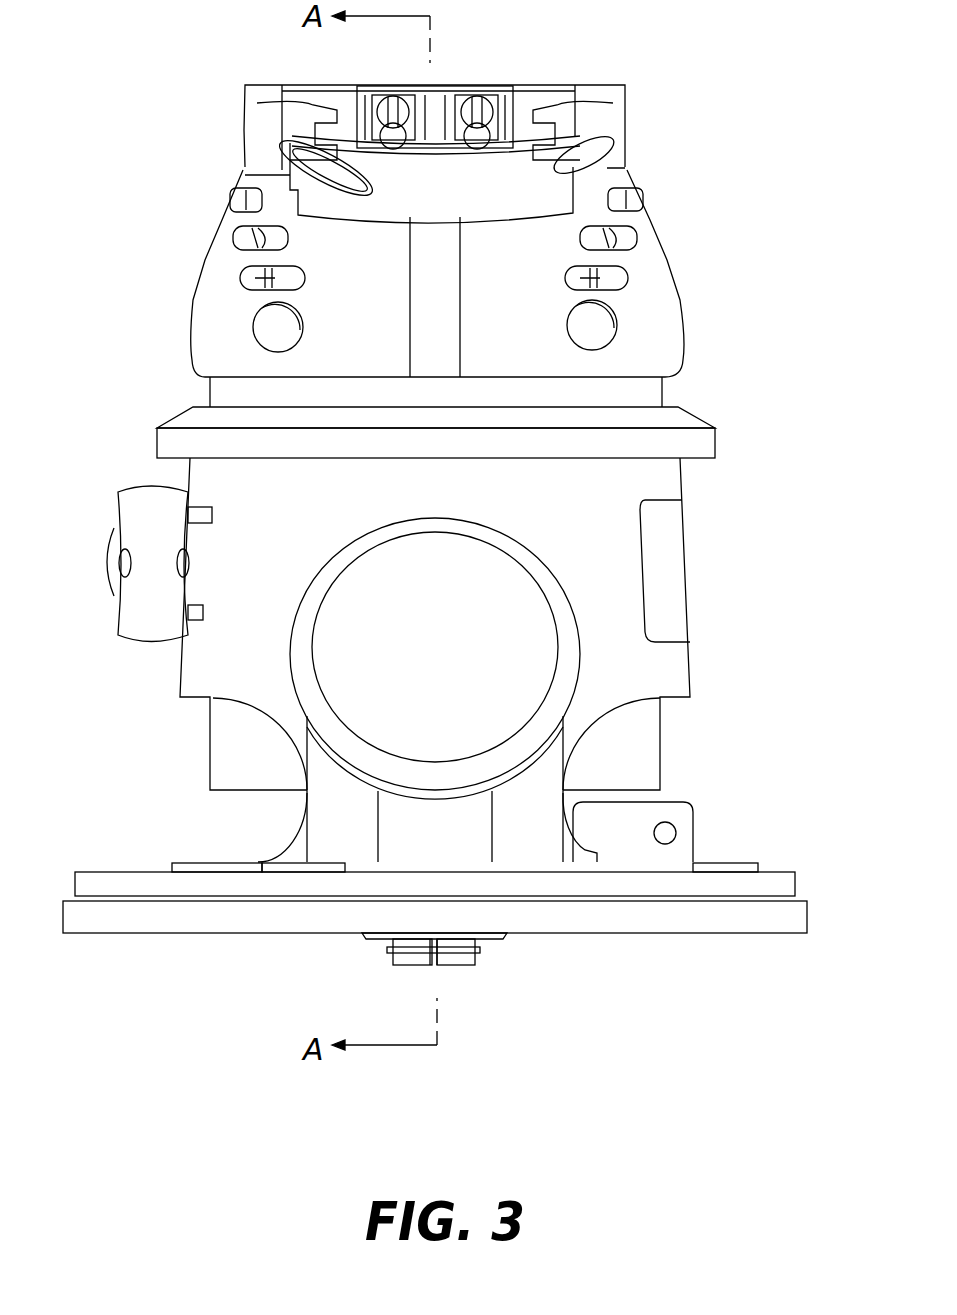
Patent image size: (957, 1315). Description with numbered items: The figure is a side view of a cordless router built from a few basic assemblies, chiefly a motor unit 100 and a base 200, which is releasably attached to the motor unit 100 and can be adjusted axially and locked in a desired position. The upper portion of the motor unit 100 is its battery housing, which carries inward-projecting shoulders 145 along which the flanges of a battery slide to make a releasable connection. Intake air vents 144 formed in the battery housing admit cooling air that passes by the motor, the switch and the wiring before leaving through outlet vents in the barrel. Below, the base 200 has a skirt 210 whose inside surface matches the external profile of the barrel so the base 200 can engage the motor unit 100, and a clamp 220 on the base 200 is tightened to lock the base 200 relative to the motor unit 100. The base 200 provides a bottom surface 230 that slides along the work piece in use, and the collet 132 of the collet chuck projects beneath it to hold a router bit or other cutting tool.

The motor unit 100 is at (190, 298).
The shoulders 145 is at (315, 108).
The intake air vents 144 is at (627, 283).
The skirt 210 is at (690, 670).
The clamp 220 is at (117, 506).
The base 200 is at (142, 872).
The bottom surface 230 is at (180, 934).
The collet 132 is at (465, 967).